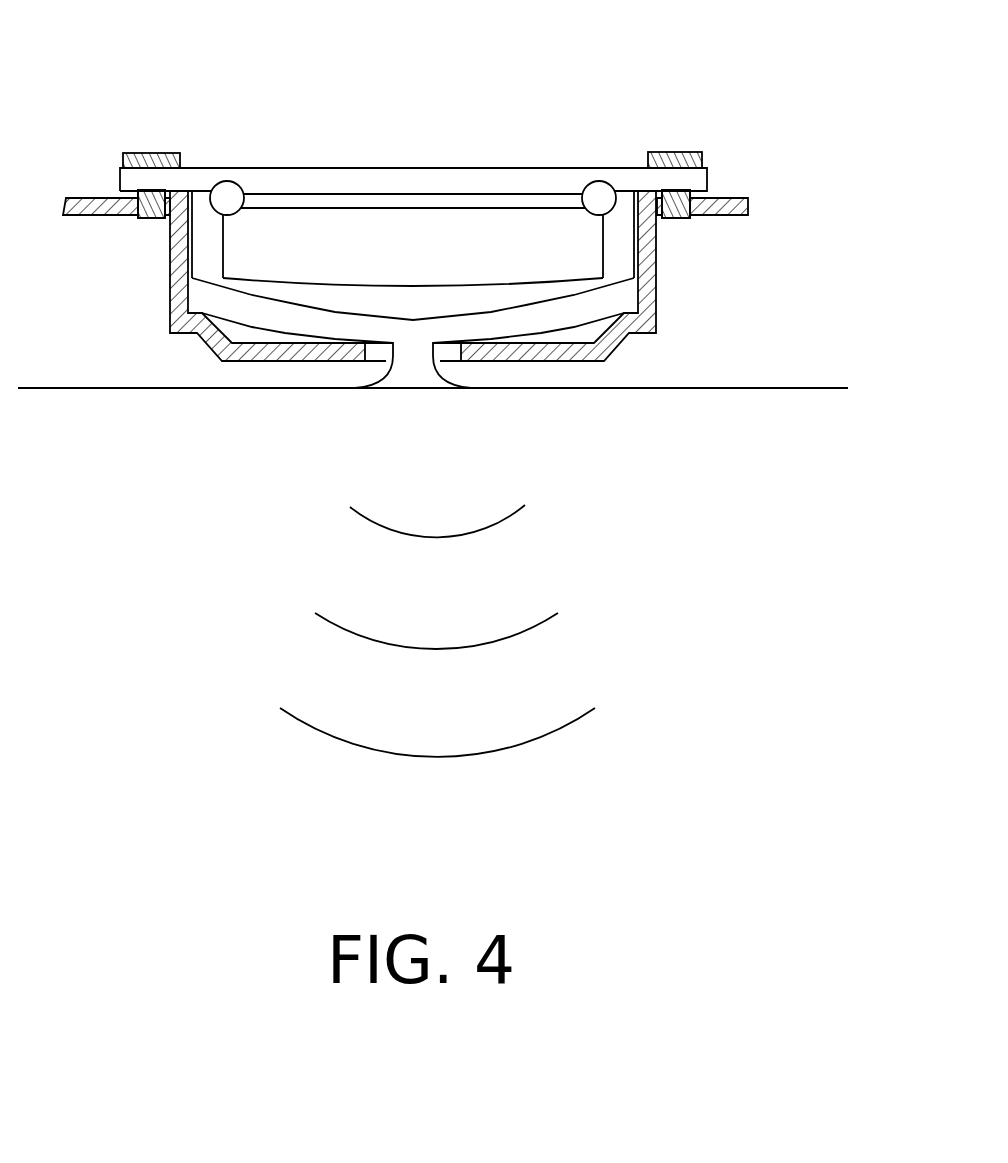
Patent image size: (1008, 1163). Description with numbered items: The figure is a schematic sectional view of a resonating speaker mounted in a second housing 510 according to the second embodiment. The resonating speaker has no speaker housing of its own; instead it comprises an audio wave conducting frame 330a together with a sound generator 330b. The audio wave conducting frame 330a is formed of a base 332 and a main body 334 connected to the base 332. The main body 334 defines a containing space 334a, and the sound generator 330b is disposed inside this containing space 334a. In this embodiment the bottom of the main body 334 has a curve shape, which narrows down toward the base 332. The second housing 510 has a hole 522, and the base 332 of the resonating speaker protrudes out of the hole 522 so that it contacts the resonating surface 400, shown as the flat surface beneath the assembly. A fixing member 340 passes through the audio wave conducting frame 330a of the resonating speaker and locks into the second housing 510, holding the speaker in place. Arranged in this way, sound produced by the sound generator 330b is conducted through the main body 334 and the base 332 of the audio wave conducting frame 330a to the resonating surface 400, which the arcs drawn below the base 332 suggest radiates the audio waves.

The main body 334 is at (557, 177).
The containing space 334a is at (483, 186).
The audio wave conducting frame 330a is at (623, 158).
The sound generator 330b is at (315, 253).
The fixing member 340 is at (155, 152).
The second housing 510 is at (748, 201).
The resonating surface 400 is at (770, 385).
The base 332 is at (404, 372).
The hole 522 is at (456, 355).